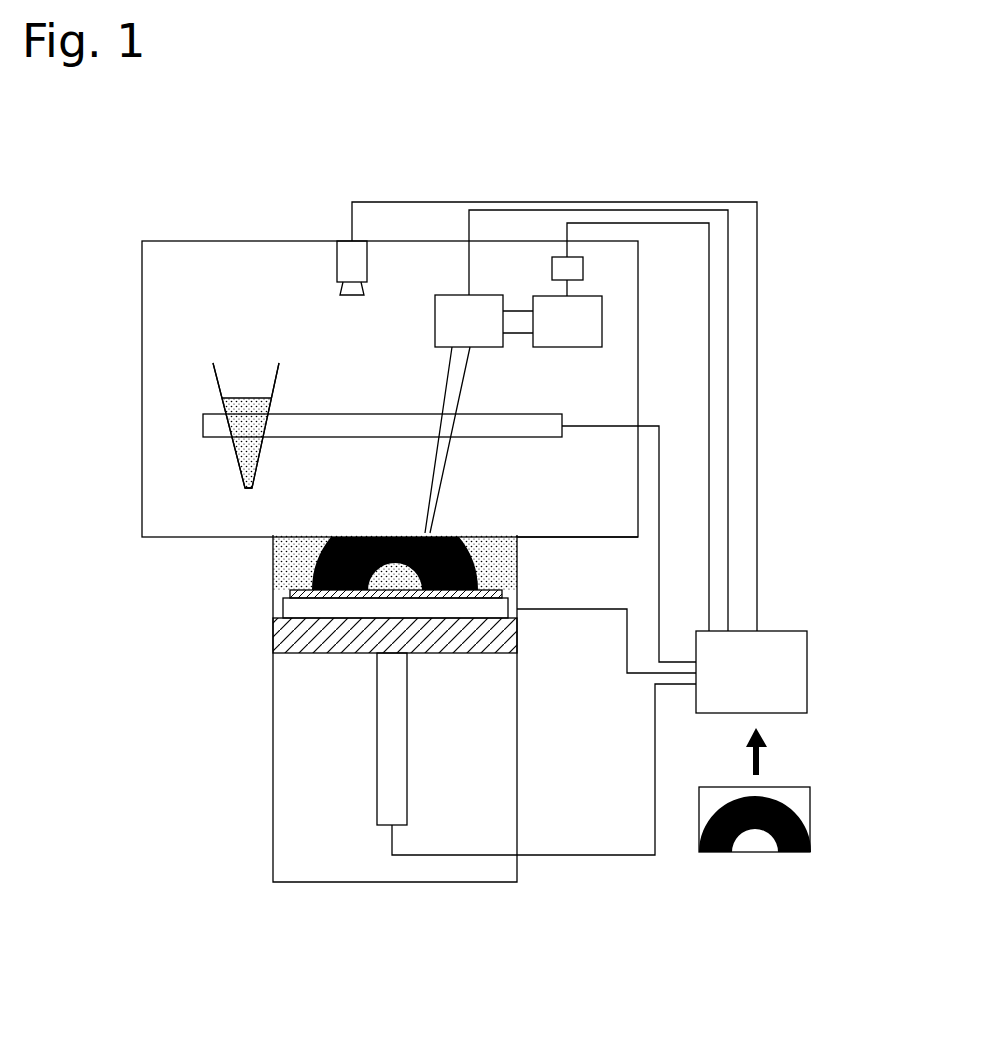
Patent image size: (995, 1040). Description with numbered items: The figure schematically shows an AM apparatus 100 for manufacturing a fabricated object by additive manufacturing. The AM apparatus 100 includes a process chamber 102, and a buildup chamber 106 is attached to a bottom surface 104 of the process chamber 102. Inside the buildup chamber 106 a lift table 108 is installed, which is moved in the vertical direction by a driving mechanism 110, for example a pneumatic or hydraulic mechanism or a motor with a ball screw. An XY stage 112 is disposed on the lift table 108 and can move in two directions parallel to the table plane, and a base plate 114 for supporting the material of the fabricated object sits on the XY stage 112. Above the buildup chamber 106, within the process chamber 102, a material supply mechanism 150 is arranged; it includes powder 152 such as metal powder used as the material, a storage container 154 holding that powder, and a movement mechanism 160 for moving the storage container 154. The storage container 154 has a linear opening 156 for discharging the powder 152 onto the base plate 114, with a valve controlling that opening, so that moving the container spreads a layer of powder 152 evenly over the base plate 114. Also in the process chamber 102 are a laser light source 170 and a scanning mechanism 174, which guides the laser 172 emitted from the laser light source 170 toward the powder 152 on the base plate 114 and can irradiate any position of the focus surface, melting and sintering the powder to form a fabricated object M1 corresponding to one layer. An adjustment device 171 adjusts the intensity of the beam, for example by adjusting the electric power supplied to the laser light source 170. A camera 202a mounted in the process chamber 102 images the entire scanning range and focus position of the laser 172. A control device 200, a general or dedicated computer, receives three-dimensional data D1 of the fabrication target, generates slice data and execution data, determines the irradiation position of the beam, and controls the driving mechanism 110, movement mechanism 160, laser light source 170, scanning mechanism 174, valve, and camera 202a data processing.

The AM apparatus 100 is at (408, 145).
The process chamber 102 is at (215, 259).
The camera 202a is at (350, 260).
The adjustment device 171 is at (561, 258).
The laser 172 is at (518, 322).
The scanning mechanism 174 is at (441, 326).
The laser light source 170 is at (572, 315).
The material supply mechanism 150 is at (227, 355).
The storage container 154 is at (217, 385).
The powder 152 is at (240, 410).
The opening 156 is at (252, 488).
The movement mechanism 160 is at (500, 422).
The bottom surface 104 is at (563, 535).
The fabricated object M1 is at (478, 568).
The base plate 114 is at (285, 590).
The XY stage 112 is at (297, 612).
The lift table 108 is at (290, 640).
The driving mechanism 110 is at (392, 757).
The buildup chamber 106 is at (273, 790).
The control device 200 is at (793, 677).
The three-dimensional data D1 is at (812, 826).